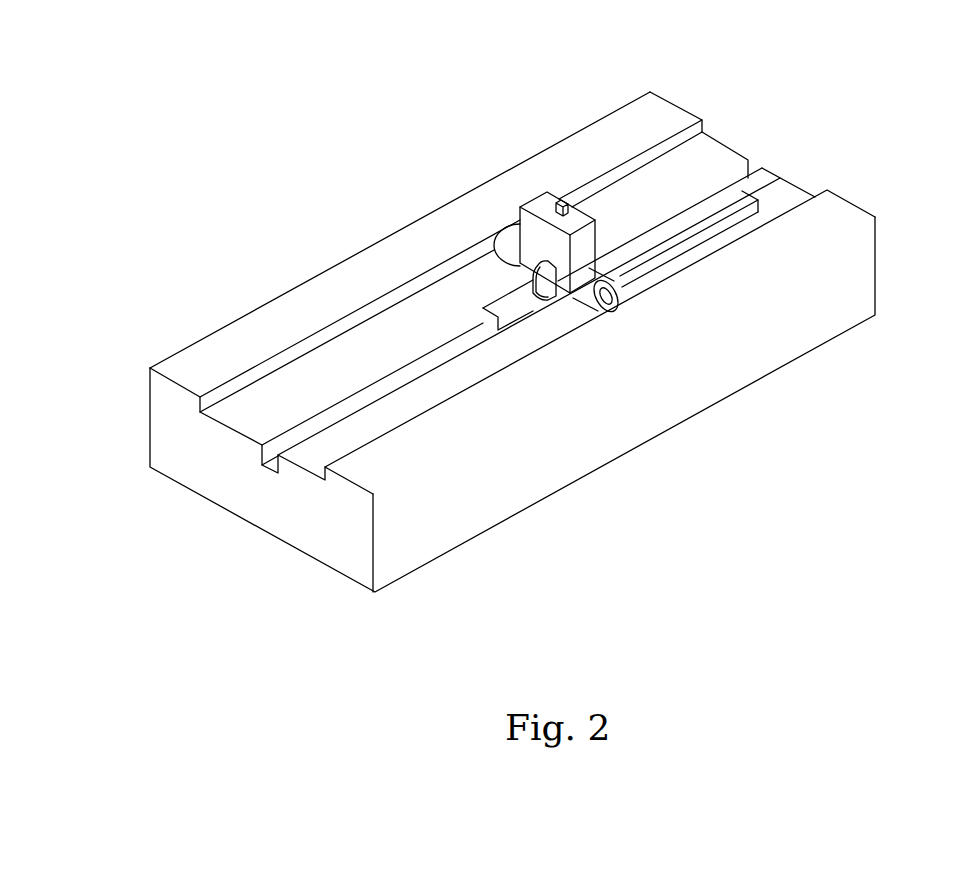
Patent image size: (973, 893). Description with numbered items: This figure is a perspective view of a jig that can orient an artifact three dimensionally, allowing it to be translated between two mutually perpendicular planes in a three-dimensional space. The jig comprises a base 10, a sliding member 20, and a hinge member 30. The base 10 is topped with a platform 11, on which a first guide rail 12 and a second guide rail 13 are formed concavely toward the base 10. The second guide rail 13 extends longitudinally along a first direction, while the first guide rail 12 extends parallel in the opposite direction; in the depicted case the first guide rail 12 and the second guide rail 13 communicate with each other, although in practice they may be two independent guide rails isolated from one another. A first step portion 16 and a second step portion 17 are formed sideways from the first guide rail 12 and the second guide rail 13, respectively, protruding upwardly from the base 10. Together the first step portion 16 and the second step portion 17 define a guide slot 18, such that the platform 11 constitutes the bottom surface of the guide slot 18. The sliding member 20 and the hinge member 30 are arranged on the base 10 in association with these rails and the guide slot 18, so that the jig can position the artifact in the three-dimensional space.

The base 10 is at (650, 410).
The platform 11 is at (367, 347).
The first guide rail 12 is at (732, 178).
The second guide rail 13 is at (285, 447).
The first step portion 16 is at (250, 342).
The second step portion 17 is at (838, 217).
The guide slot 18 is at (745, 146).
The sliding member 20 is at (630, 188).
The hinge member 30 is at (532, 233).